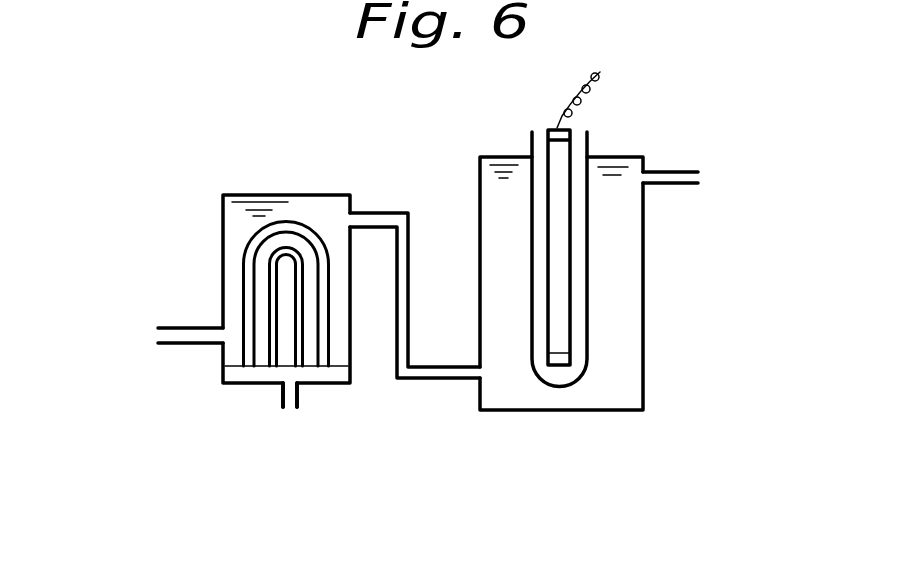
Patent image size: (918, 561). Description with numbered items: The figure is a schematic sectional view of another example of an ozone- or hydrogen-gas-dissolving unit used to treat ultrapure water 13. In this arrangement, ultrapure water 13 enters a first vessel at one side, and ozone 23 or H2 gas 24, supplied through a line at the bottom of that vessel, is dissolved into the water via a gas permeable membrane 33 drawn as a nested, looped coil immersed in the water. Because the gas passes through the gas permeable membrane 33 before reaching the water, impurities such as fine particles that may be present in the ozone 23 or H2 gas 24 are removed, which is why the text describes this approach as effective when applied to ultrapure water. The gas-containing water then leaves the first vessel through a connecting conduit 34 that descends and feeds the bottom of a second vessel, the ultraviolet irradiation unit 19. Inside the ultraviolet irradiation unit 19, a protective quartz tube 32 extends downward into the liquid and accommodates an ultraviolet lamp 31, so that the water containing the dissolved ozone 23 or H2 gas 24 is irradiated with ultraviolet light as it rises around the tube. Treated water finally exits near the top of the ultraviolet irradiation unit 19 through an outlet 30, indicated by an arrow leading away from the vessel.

The ultrapure water 13 is at (150, 337).
The gas permeable membrane 33 is at (300, 257).
The connecting conduit 34 is at (410, 290).
The ultraviolet irradiation unit 19 is at (645, 287).
The protective quartz tube 32 is at (530, 151).
The ultraviolet lamp 31 is at (572, 131).
The outlet conduit 30 is at (705, 177).
The ozone 23 is at (289, 425).
The H2 gas 24 is at (289, 425).